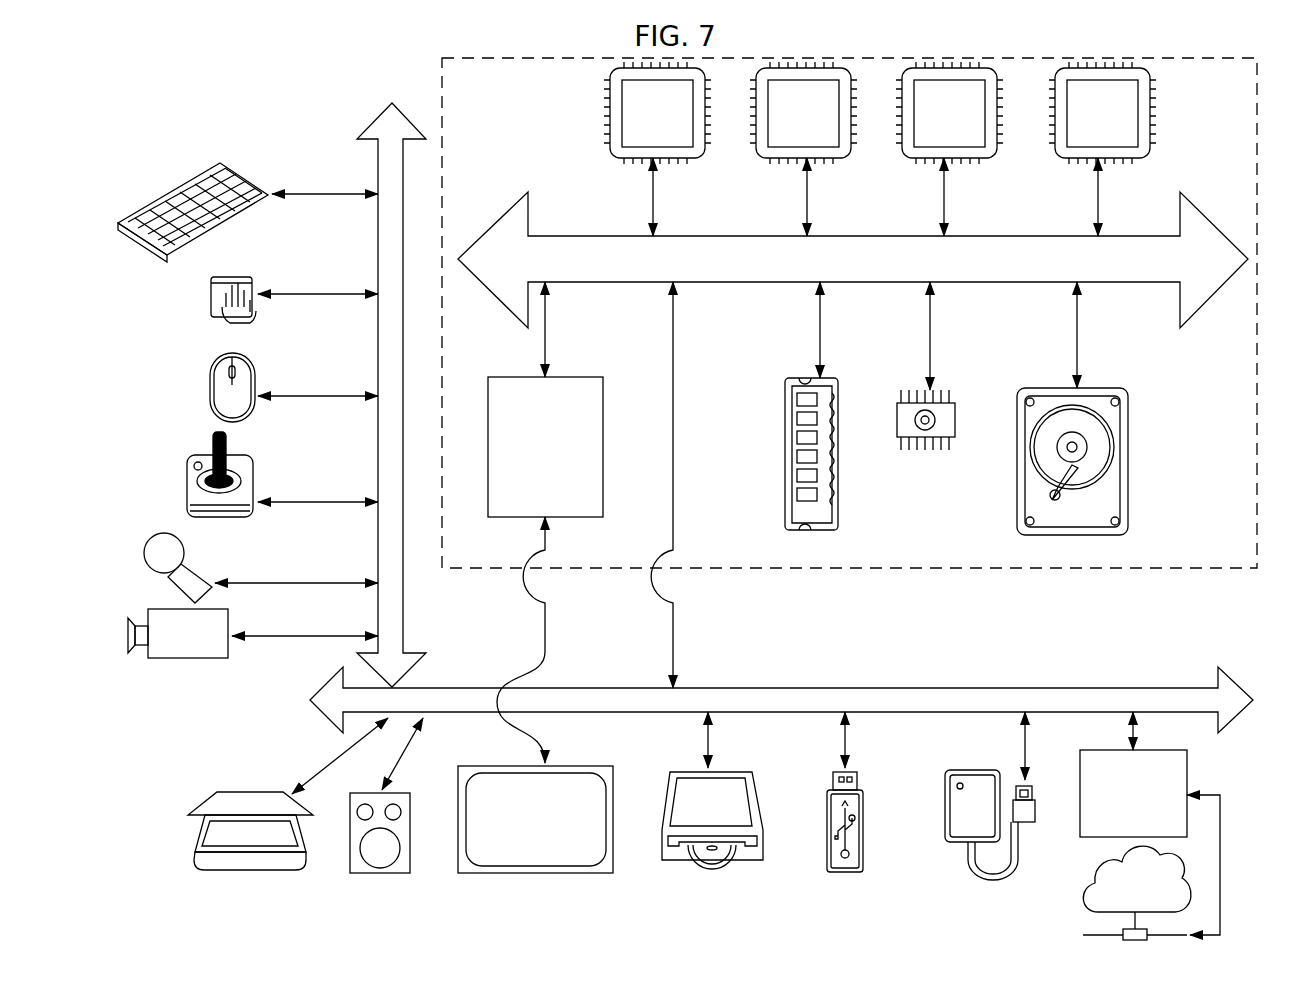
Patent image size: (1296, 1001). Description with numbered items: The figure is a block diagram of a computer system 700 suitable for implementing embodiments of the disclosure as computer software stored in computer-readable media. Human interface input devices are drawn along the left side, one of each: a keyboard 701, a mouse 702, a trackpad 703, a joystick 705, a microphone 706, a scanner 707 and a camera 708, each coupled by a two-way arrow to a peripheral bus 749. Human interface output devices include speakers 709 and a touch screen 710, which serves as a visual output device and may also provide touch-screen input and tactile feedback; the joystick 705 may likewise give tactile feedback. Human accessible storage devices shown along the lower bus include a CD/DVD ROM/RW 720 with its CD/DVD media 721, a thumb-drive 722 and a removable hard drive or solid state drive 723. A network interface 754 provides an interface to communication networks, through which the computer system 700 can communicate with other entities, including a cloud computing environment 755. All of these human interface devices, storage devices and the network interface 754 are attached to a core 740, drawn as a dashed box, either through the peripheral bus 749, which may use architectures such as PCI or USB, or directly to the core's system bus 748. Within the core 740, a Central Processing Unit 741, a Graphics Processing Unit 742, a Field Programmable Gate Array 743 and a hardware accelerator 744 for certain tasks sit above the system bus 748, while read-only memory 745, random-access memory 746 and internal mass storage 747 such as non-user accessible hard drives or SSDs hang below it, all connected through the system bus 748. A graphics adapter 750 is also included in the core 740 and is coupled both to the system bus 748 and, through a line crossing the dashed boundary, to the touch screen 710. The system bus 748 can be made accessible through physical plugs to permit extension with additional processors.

The computer system 700 is at (140, 104).
The keyboard 701 is at (118, 230).
The mouse 702 is at (202, 388).
The trackpad 703 is at (205, 306).
The joystick 705 is at (185, 502).
The microphone 706 is at (148, 563).
The scanner 707 is at (193, 858).
The camera 708 is at (128, 648).
The speakers 709 is at (380, 873).
The touch screen 710 is at (527, 873).
The CD/DVD ROM/RW 720 is at (734, 823).
The CD/DVD media 721 is at (705, 868).
The thumb-drive 722 is at (845, 872).
The removable hard drive or solid state drive 723 is at (945, 840).
The core 740 is at (863, 568).
The Central Processing Unit 741 is at (640, 139).
The Graphics Processing Unit 742 is at (786, 139).
The Field Programmable Gate Array 743 is at (932, 139).
The hardware accelerator 744 is at (1085, 139).
The read-only memory 745 is at (920, 450).
The random-access memory 746 is at (785, 452).
The internal mass storage 747 is at (1036, 388).
The system bus 748 is at (947, 271).
The peripheral bus 749 is at (378, 138).
The graphics adapter 750 is at (545, 522).
The network interface 754 is at (1150, 823).
The cloud computing environment 755 is at (1085, 900).